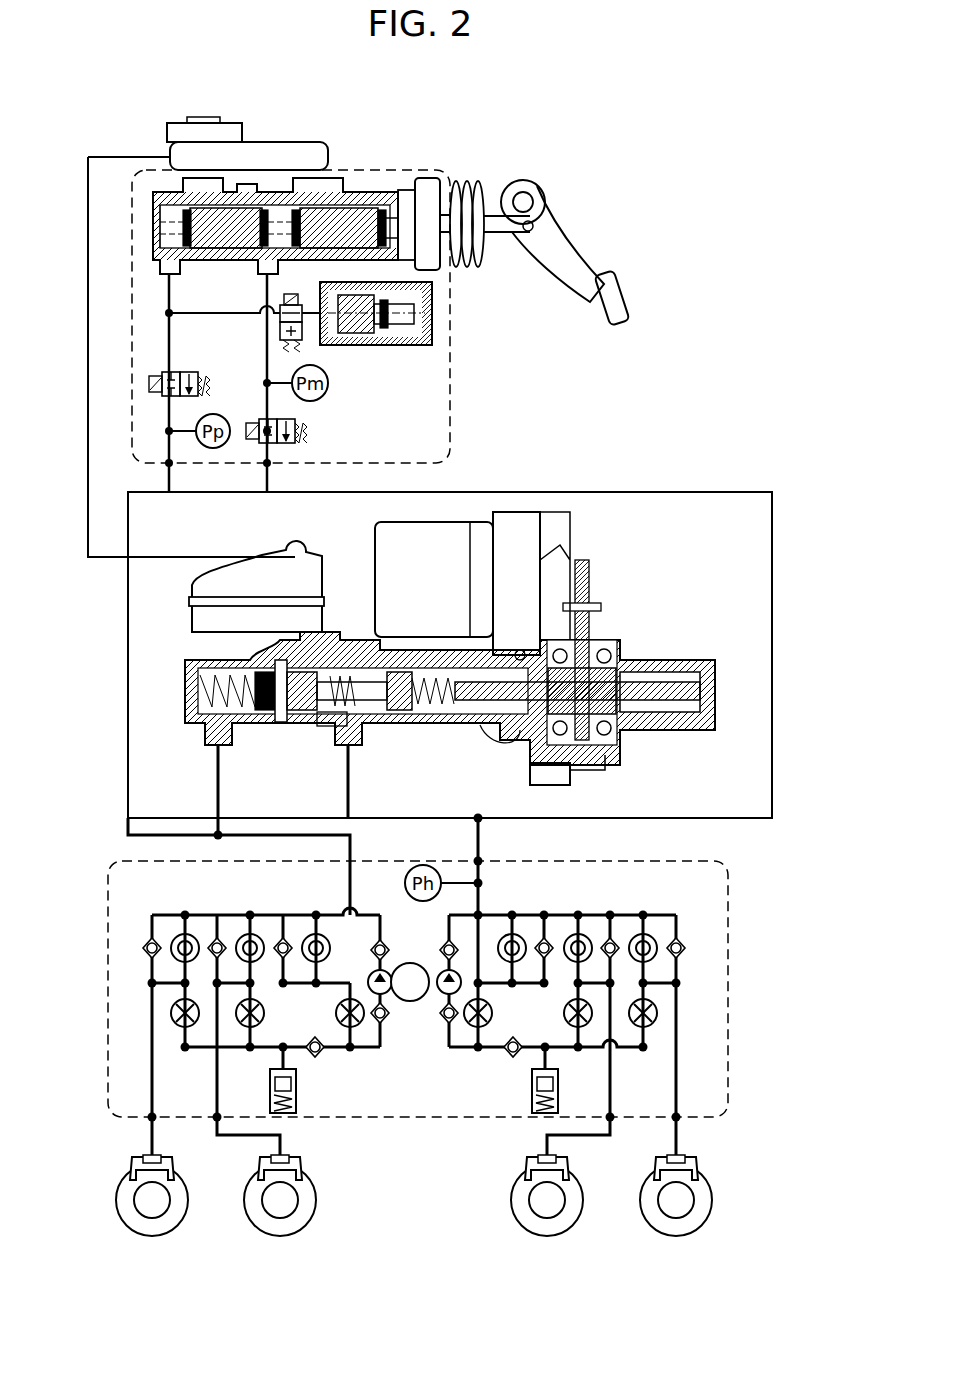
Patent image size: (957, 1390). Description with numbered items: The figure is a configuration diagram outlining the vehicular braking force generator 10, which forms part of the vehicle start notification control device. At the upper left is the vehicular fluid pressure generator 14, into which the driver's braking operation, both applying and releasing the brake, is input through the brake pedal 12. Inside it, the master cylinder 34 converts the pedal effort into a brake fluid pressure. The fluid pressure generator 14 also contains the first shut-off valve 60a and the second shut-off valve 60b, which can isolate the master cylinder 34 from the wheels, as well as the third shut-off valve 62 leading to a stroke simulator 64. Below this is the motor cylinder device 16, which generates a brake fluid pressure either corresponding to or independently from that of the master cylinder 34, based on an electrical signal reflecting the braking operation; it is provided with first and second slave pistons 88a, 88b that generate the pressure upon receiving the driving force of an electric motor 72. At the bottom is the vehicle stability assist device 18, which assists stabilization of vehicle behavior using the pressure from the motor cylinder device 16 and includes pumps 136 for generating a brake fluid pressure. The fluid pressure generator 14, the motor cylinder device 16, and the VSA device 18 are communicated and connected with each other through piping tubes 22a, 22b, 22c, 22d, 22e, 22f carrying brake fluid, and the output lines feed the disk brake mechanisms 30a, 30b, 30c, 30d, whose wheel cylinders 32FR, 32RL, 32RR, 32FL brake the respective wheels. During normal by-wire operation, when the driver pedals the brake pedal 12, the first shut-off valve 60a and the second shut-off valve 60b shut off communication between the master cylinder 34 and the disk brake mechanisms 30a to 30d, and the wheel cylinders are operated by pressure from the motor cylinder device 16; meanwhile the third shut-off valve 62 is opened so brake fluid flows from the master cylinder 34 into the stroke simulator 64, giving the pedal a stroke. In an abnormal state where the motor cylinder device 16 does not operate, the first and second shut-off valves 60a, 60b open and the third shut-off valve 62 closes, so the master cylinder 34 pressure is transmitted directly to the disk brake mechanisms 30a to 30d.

The vehicular braking force generator 10 is at (558, 162).
The brake pedal 12 is at (628, 293).
The vehicular fluid pressure generator 14 is at (452, 372).
The motor cylinder device 16 is at (602, 540).
The vehicle stability assist device 18 is at (630, 860).
The master cylinder 34 is at (358, 190).
The third shut-off valve 62 is at (292, 305).
The stroke simulator 64 is at (434, 304).
The first shut-off valve 60a is at (298, 430).
The second shut-off valve 60b is at (183, 372).
The electric motor 72 is at (436, 584).
The first slave piston 88a is at (512, 735).
The second slave piston 88b is at (333, 736).
The piping tube 22a is at (776, 586).
The piping tube 22b is at (398, 808).
The piping tube 22c is at (480, 838).
The piping tube 22d is at (126, 650).
The piping tube 22e is at (214, 795).
The piping tube 22f is at (320, 834).
The pump 136 is at (394, 997).
The wheel cylinder 32FL is at (174, 1178).
The wheel cylinder 32RR is at (302, 1178).
The wheel cylinder 32RL is at (569, 1178).
The wheel cylinder 32FR is at (698, 1178).
The disk brake mechanism 30a is at (708, 1224).
The disk brake mechanism 30b is at (579, 1224).
The disk brake mechanism 30c is at (312, 1224).
The disk brake mechanism 30d is at (184, 1224).